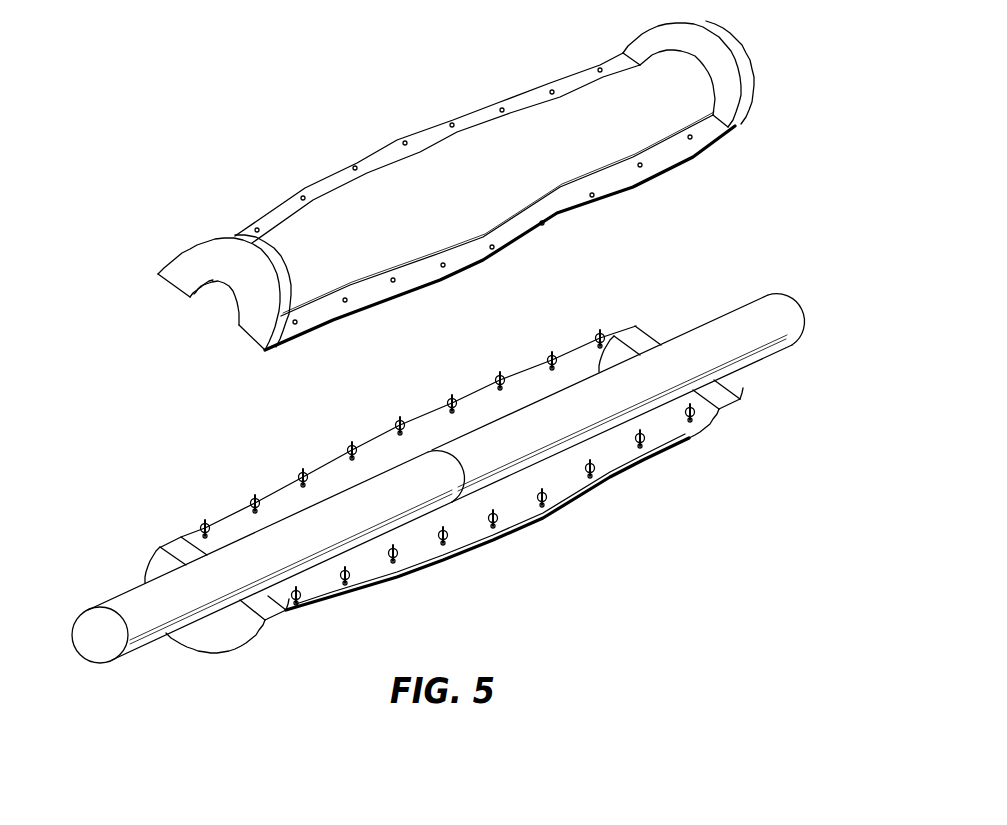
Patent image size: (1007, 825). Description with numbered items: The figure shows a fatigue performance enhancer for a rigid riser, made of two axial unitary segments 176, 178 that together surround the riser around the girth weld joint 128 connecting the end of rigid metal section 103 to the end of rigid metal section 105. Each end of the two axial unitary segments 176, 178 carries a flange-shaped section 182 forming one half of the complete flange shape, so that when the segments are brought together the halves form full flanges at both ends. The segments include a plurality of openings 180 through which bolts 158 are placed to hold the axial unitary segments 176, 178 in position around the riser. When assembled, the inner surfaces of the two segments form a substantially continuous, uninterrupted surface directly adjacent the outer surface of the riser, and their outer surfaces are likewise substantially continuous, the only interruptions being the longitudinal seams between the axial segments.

The rigid metal section 103 is at (128, 603).
The rigid metal section 105 is at (778, 306).
The girth weld joint 128 is at (444, 446).
The bolts 158 is at (548, 359).
The axial unitary segment 176 is at (437, 153).
The axial unitary segment 178 is at (332, 468).
The openings 180 is at (550, 91).
The flange-shaped section 182 is at (716, 36).